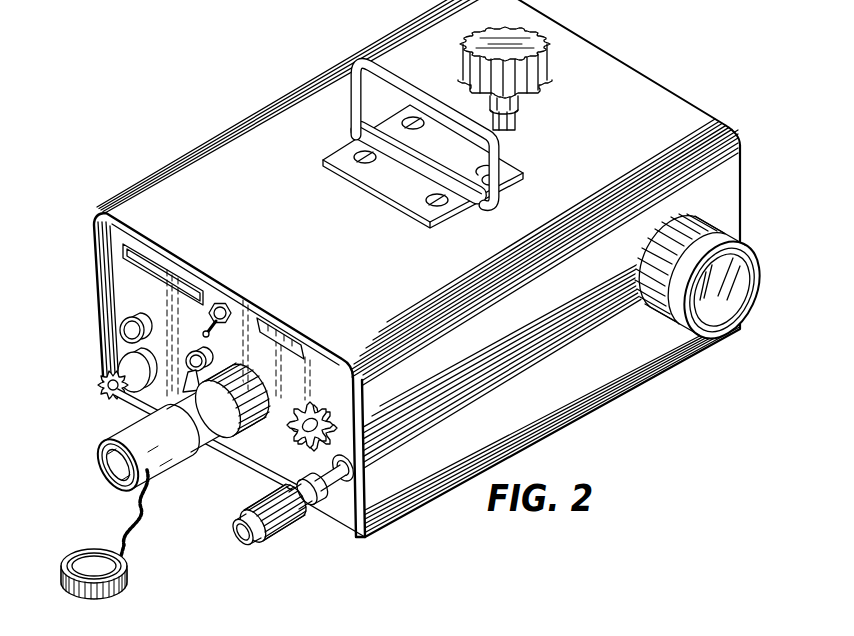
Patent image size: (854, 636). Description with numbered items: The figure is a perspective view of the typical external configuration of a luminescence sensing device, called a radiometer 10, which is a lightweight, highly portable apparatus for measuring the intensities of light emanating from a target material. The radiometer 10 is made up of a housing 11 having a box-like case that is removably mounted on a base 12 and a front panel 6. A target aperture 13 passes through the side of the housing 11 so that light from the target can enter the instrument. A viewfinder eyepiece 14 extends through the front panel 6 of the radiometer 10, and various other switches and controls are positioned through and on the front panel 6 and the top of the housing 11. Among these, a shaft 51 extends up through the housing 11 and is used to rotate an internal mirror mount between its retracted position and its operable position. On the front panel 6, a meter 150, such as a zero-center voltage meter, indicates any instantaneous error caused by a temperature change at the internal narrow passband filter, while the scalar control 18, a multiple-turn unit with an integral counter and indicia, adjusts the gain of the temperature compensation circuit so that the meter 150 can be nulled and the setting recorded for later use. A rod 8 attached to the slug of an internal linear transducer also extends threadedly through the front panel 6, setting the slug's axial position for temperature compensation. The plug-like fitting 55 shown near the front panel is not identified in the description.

The radiometer 10 is at (417, 268).
The housing 11 is at (228, 358).
The base 12 is at (588, 412).
The target aperture 13 is at (713, 318).
The viewfinder eyepiece 14 is at (123, 427).
The meter 150 is at (287, 340).
The shaft 51 is at (513, 117).
The scalar control 18 is at (100, 391).
The front panel 6 is at (248, 447).
The rod 8 is at (352, 472).
The plug 55 is at (266, 538).